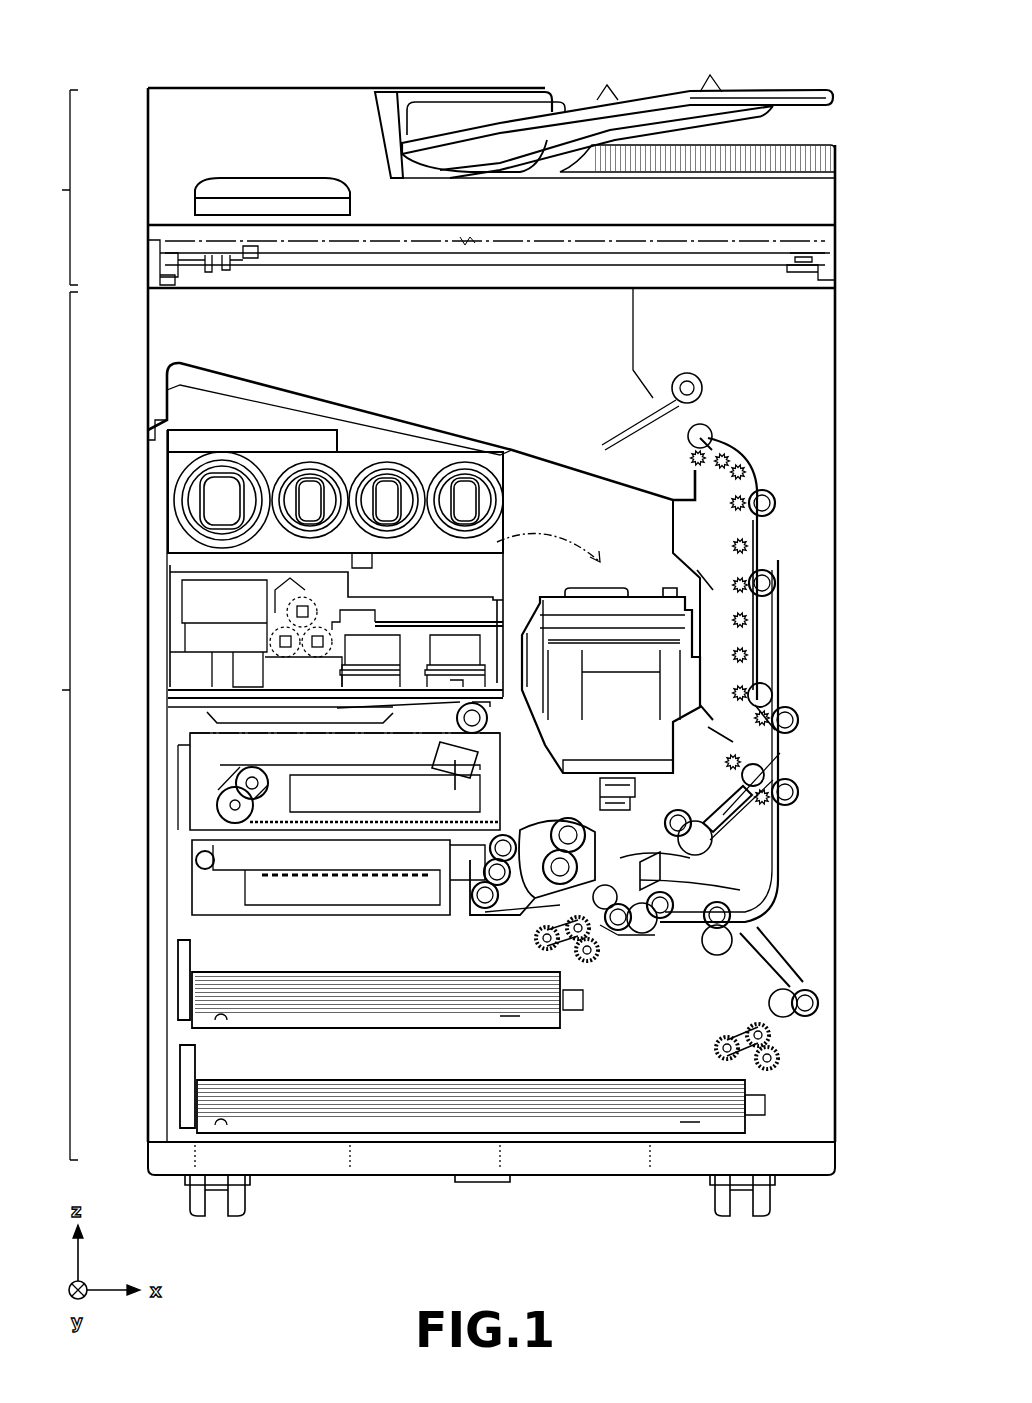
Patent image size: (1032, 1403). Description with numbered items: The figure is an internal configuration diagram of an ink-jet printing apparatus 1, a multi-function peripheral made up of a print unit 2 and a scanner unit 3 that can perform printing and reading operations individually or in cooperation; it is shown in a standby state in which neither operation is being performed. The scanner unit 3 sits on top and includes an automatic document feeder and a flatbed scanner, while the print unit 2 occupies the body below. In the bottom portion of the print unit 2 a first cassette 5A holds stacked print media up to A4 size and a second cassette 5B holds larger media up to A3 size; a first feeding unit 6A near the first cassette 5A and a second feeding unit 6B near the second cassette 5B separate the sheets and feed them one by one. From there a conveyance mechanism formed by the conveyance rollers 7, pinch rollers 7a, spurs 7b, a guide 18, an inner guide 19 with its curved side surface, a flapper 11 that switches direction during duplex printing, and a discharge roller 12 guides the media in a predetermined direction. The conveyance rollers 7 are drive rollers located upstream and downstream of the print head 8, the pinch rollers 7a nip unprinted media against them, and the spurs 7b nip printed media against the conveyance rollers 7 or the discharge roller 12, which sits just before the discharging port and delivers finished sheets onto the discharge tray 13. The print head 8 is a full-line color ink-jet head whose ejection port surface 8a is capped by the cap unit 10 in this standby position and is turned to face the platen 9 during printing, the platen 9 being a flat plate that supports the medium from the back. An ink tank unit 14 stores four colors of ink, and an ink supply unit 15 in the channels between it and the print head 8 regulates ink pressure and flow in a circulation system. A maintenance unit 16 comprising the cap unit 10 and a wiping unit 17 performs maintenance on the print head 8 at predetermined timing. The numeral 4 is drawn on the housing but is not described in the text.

The ink-jet printing apparatus 1 is at (773, 73).
The print unit 2 is at (58, 726).
The scanner unit 3 is at (436, 180).
The housing 4 is at (837, 378).
The first cassette 5A is at (182, 987).
The second cassette 5B is at (182, 1097).
The first feeding unit 6A is at (587, 950).
The second feeding unit 6B is at (778, 1055).
The conveyance rollers 7 is at (772, 505).
The pinch rollers 7a is at (618, 917).
The spurs 7b is at (705, 450).
The print head 8 is at (611, 699).
The ejection port surface 8a is at (615, 790).
The platen 9 is at (690, 830).
The cap unit 10 is at (735, 890).
The flapper 11 is at (770, 672).
The discharge roller 12 is at (700, 436).
The discharge tray 13 is at (438, 425).
The ink tank unit 14 is at (178, 462).
The ink supply unit 15 is at (178, 635).
The maintenance unit 16 is at (190, 878).
The wiping unit 17 is at (190, 760).
The guide 18 is at (760, 552).
The inner guide 19 is at (655, 935).